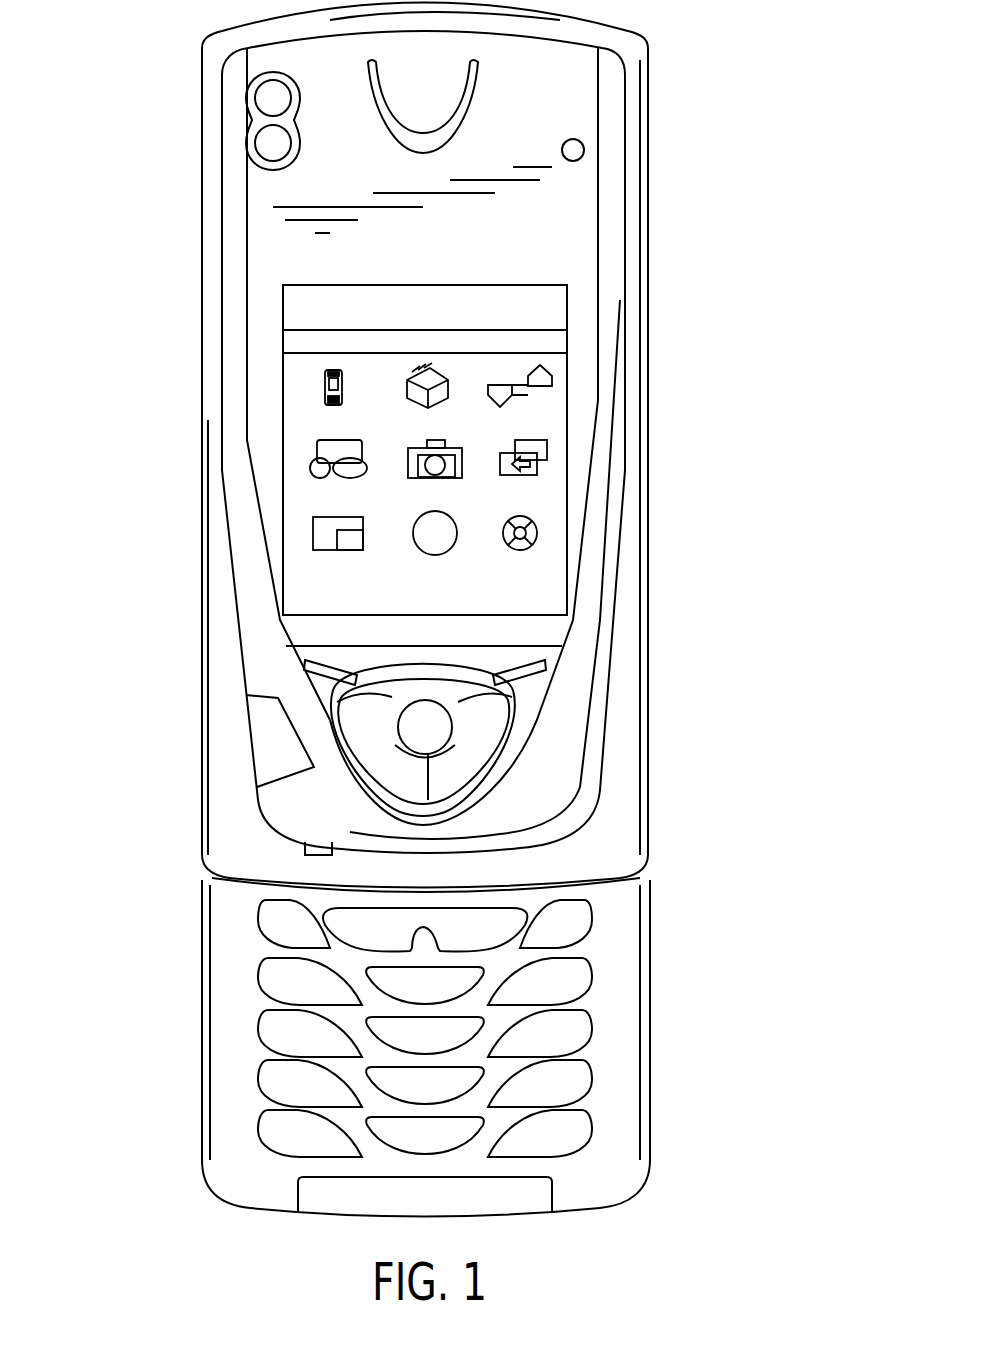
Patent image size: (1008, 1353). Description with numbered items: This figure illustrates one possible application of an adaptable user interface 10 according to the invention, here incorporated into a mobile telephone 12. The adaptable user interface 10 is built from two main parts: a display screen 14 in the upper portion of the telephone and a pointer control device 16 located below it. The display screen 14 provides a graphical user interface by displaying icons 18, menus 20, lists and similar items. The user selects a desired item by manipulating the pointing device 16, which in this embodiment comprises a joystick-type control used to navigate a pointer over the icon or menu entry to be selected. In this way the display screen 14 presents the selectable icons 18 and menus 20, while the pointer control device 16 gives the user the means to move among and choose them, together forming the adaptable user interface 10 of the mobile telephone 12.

The adaptable user interface 10 is at (198, 492).
The mobile telephone 12 is at (791, 199).
The display screen 14 is at (557, 515).
The pointer control device 16 is at (447, 735).
The icons 18 is at (542, 366).
The menus 20 is at (408, 596).